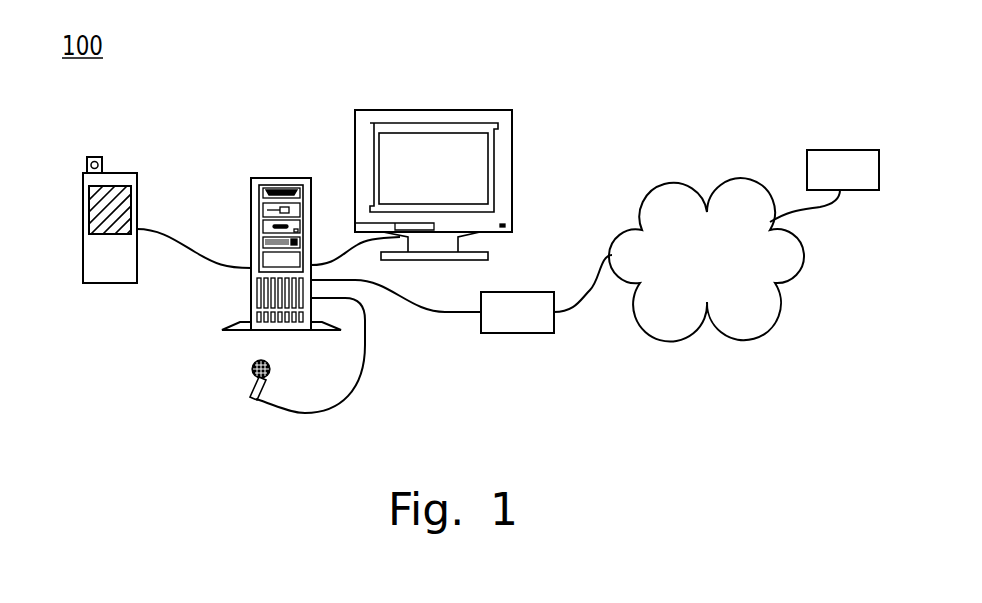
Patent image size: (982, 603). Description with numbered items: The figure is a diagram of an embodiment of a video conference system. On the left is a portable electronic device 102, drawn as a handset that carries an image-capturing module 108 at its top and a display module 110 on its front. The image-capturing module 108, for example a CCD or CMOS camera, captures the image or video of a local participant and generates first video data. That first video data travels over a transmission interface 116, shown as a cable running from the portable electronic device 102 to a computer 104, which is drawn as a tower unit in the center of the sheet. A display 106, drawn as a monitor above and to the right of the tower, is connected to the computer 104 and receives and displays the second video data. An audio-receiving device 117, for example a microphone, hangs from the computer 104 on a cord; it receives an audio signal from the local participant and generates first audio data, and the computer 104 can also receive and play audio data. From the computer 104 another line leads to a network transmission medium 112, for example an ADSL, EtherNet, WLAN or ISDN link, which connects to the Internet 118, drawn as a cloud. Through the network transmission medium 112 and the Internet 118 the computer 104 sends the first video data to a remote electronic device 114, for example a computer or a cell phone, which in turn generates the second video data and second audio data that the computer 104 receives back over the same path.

The portable electronic device 102 is at (138, 197).
The computer 104 is at (251, 223).
The display 106 is at (512, 170).
The image-capturing module 108 is at (87, 163).
The display module 110 is at (89, 201).
The network transmission medium 112 is at (461, 294).
The remote electronic device 114 is at (824, 186).
The transmission interface 116 is at (195, 252).
The audio-receiving device 117 is at (250, 388).
The Internet 118 is at (706, 259).